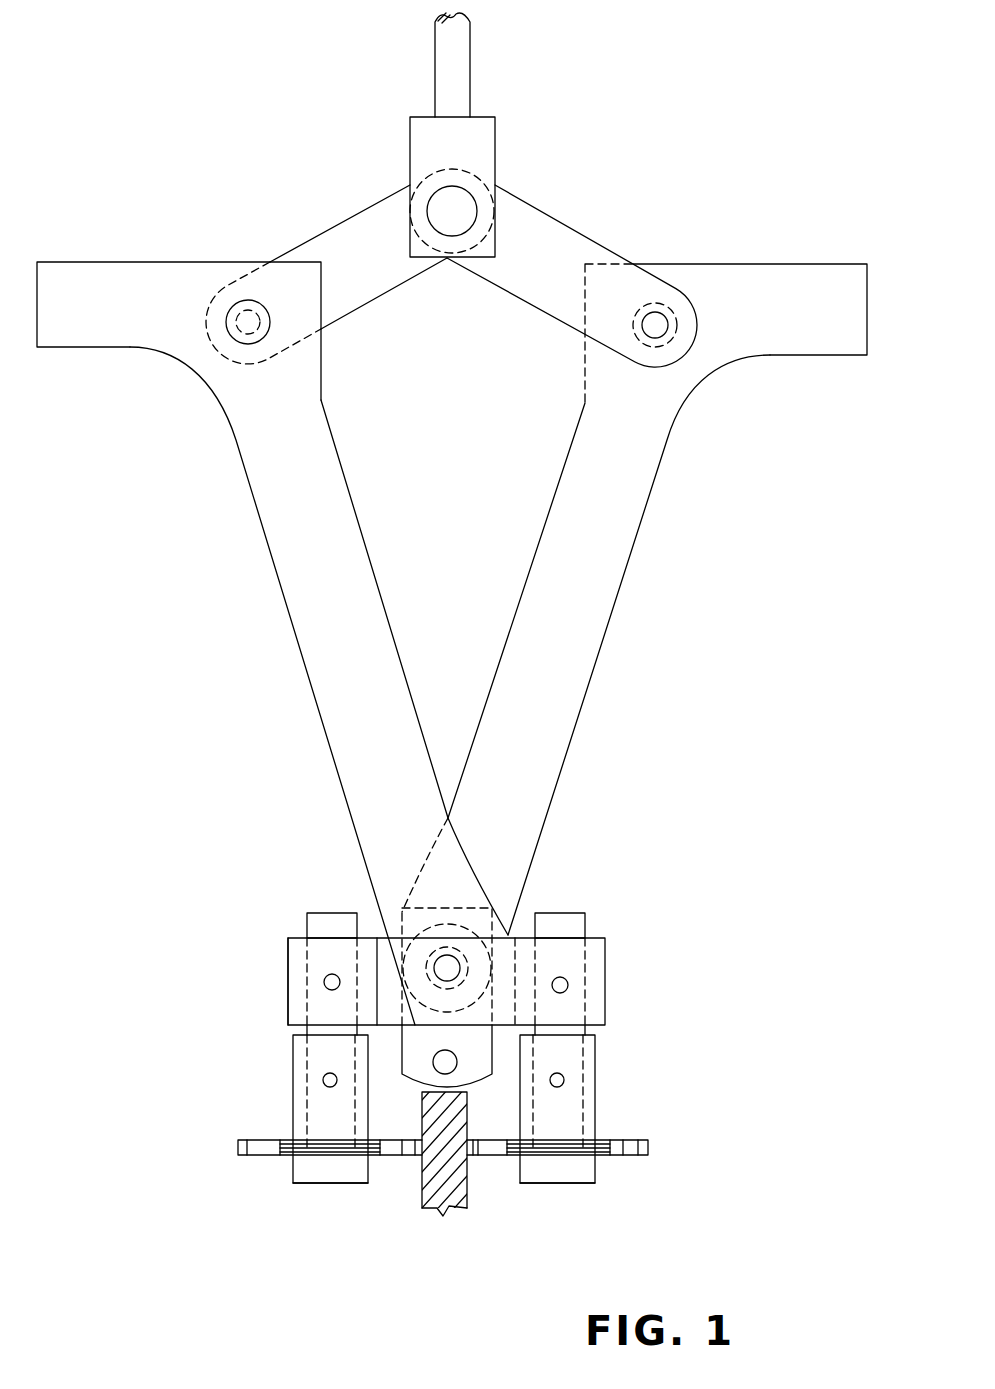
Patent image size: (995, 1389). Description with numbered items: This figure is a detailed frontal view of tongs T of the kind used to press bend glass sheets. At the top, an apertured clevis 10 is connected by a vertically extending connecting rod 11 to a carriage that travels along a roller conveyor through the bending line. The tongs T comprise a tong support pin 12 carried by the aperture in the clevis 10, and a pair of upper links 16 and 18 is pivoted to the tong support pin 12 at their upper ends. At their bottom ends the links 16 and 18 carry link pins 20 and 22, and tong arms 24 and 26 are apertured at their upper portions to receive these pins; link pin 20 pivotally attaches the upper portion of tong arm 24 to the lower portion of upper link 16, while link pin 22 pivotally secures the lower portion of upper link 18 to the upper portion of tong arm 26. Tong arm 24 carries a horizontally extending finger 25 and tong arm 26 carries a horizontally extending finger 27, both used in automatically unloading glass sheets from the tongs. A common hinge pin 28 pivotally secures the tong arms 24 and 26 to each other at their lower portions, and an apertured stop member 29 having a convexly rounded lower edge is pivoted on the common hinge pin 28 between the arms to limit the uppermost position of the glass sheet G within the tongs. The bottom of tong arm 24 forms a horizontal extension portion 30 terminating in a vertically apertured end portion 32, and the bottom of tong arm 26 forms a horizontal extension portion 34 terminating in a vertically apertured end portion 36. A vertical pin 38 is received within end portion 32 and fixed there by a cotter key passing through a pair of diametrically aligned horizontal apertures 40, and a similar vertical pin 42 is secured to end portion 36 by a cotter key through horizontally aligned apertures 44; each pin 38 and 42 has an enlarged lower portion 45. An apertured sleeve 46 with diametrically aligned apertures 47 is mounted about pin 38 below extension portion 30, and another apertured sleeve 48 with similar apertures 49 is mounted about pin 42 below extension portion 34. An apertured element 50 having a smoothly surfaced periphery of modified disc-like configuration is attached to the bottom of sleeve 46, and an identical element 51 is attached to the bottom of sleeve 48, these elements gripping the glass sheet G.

The apertured clevis 10 is at (495, 127).
The connecting rod 11 is at (437, 70).
The tong support pin 12 is at (450, 224).
The upper link 16 is at (355, 213).
The upper link 18 is at (560, 221).
The link pin 20 is at (246, 322).
The link pin 22 is at (665, 323).
The tong arm 24 is at (293, 625).
The horizontally extending finger 25 is at (95, 347).
The tong arm 26 is at (610, 620).
The horizontally extending finger 27 is at (812, 355).
The common hinge pin 28 is at (447, 968).
The apertured stop member 29 is at (478, 1082).
The horizontal extension portion 30 is at (531, 940).
The vertically apertured end portion 32 is at (605, 1004).
The horizontal extension portion 34 is at (367, 938).
The vertically apertured end portion 36 is at (288, 968).
The vertical pin 38 is at (585, 925).
The horizontal apertures 40 is at (565, 985).
The vertical pin 42 is at (307, 924).
The horizontally aligned apertures 44 is at (327, 984).
The enlarged lower portion 45 is at (313, 1183).
The apertured sleeve 46 is at (595, 1095).
The diametrically aligned apertures 47 is at (564, 1080).
The apertured sleeve 48 is at (293, 1095).
The diametrically aligned apertures 49 is at (324, 1079).
The apertured element 50 is at (648, 1147).
The apertured element 51 is at (238, 1146).
The glass sheet G is at (433, 1212).
The tongs T is at (452, 643).